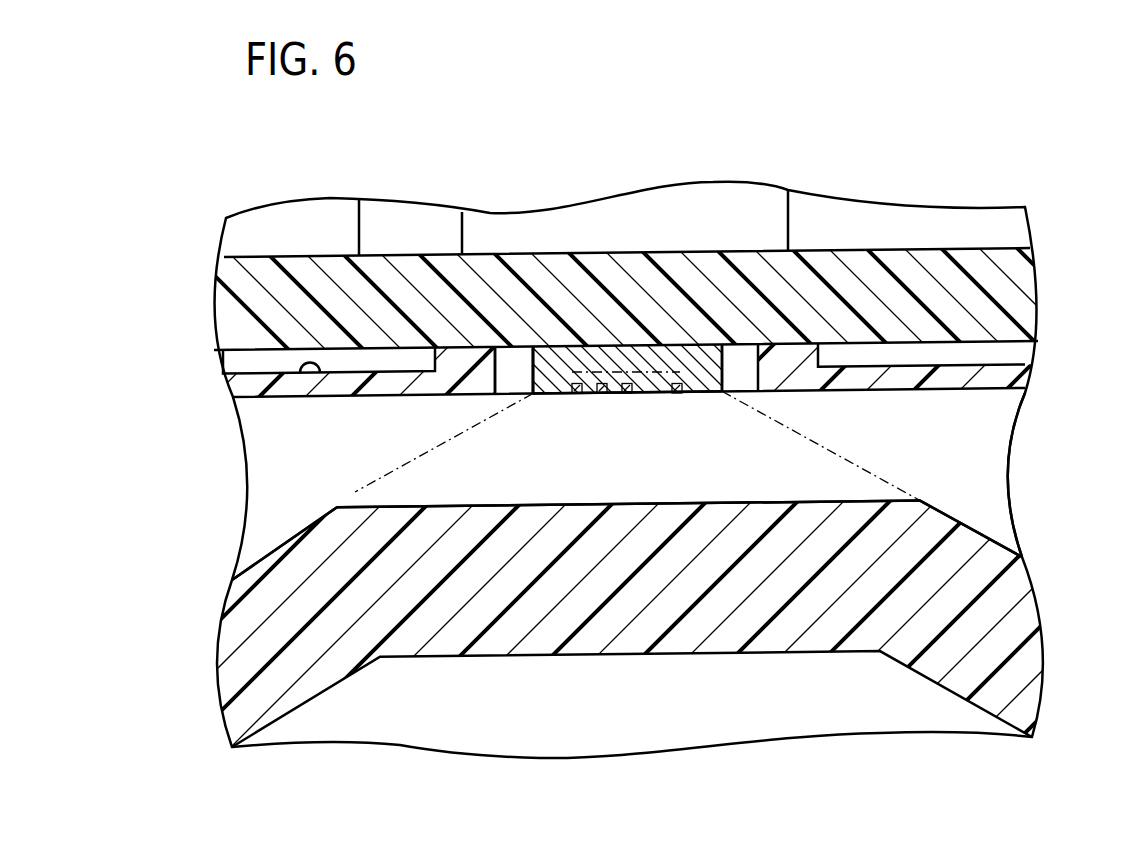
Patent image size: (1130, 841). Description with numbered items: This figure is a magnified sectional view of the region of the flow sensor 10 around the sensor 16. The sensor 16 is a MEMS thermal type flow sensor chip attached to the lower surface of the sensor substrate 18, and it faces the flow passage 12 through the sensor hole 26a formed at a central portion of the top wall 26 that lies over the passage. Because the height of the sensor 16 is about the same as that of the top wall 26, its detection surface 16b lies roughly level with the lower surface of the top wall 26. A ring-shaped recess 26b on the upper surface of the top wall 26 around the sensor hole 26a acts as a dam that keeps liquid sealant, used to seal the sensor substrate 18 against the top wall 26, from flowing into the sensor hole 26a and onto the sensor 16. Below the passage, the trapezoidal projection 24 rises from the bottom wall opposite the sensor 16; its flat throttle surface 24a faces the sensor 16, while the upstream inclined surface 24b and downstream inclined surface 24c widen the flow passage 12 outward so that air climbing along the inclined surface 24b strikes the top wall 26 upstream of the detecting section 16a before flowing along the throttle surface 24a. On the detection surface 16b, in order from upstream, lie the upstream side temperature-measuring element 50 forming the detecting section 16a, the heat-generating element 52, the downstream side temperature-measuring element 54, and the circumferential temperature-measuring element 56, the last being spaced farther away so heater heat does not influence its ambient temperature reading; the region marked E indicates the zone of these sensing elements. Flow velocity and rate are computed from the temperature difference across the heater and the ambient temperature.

The flow sensor 10 is at (316, 148).
The flow passage 12 is at (985, 404).
The sensor 16 is at (560, 367).
The detecting section 16a is at (648, 372).
The detection surface 16b is at (706, 394).
The sensor substrate 18 is at (923, 246).
The projection 24 is at (960, 515).
The throttle surface 24a is at (479, 505).
The inclined surface 24b is at (273, 543).
The inclined surface 24c is at (989, 535).
The top wall 26 is at (408, 397).
The sensor hole 26a is at (499, 362).
The recess 26b is at (312, 373).
The upstream side temperature-measuring element 50 is at (577, 394).
The heat-generating element 52 is at (602, 394).
The downstream side temperature-measuring element 54 is at (627, 394).
The circumferential temperature-measuring element 56 is at (677, 394).
The detection region E is at (363, 491).